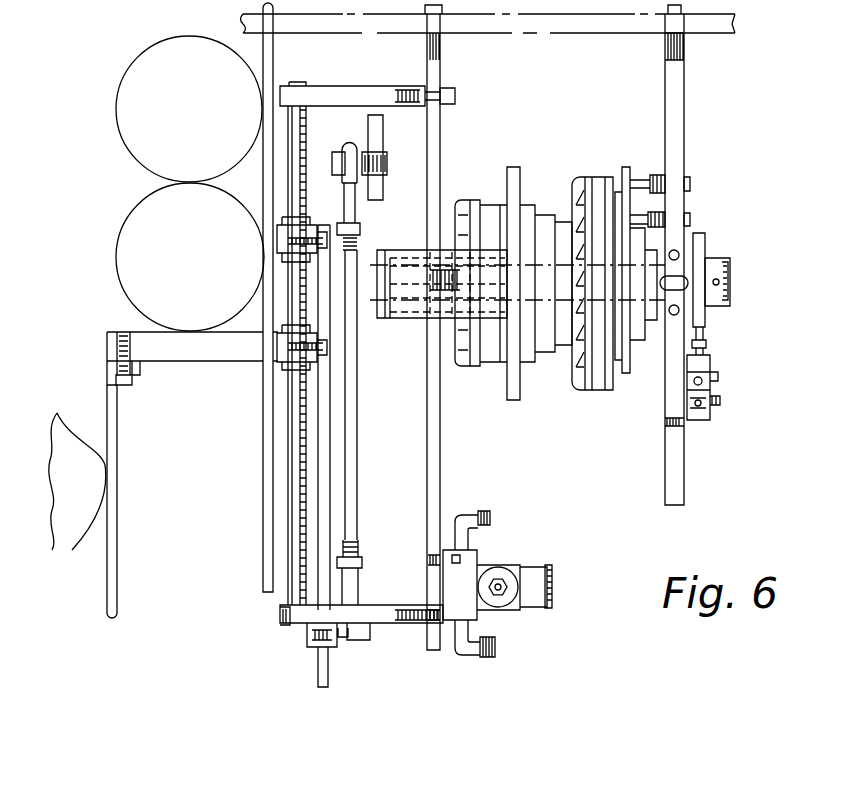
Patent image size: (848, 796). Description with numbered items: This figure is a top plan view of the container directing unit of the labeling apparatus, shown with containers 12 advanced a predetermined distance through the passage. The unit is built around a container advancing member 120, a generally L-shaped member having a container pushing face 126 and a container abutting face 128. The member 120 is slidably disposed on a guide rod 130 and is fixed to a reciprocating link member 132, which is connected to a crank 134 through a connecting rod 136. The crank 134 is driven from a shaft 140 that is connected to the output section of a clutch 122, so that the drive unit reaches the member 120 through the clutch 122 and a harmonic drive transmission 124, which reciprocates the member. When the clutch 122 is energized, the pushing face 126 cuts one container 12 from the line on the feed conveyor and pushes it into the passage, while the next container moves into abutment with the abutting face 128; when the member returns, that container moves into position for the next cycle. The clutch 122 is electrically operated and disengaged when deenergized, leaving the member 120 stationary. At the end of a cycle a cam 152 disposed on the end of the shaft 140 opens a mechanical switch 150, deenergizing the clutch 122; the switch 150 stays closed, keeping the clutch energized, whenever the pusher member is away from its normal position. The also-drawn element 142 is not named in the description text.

The container 12 is at (140, 207).
The container advancing member 120 is at (172, 357).
The clutch 122 is at (588, 173).
The harmonic drive transmission 124 is at (398, 322).
The container pushing face 126 is at (145, 332).
The container abutting face 128 is at (104, 548).
The guide rod 130 is at (295, 157).
The reciprocating link member 132 is at (323, 430).
The crank 134 is at (368, 136).
The connecting rod 136 is at (350, 515).
The shaft 140 is at (638, 265).
The slotted disc 142 is at (620, 176).
The mechanical switch 150 is at (714, 373).
The cam 152 is at (700, 313).